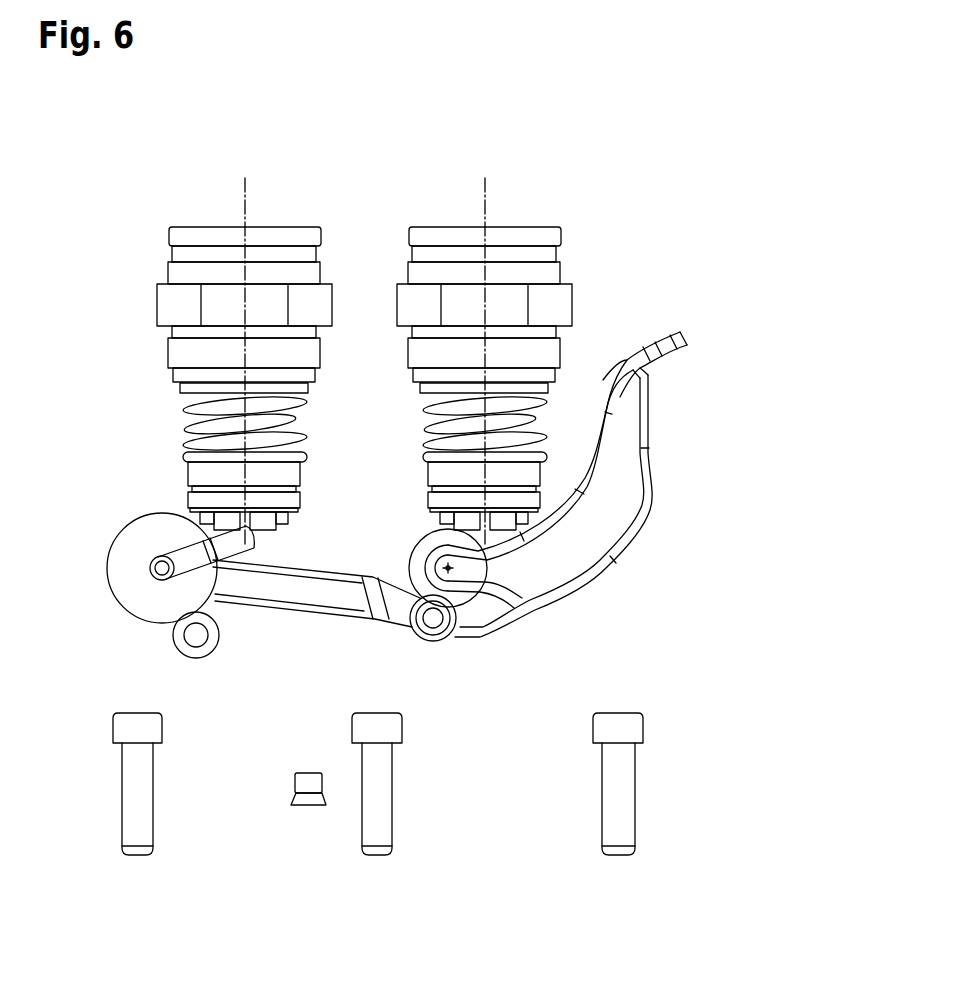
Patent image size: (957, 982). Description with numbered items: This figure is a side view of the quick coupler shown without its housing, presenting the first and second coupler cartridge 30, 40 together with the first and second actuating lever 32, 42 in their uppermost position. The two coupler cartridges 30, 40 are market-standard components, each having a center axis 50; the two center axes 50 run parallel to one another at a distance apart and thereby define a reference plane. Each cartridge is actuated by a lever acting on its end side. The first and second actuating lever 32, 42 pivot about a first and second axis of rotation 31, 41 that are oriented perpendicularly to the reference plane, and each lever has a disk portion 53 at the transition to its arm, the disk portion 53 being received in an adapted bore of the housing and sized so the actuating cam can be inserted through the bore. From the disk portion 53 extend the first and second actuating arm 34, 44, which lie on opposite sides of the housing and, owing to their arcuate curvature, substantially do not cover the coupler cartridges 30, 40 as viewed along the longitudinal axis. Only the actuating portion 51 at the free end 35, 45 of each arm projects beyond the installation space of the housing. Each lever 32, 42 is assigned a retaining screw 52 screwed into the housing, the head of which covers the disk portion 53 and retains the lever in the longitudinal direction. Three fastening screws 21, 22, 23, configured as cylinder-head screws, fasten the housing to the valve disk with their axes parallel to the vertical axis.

The fastening screw 21 is at (620, 838).
The fastening screw 22 is at (138, 835).
The fastening screw 23 is at (378, 835).
The first coupler cartridge 30 is at (448, 240).
The first axis of rotation 31 is at (452, 570).
The first actuating lever 32 is at (594, 484).
The first actuating arm 34 is at (597, 493).
The free end 35 is at (704, 328).
The second coupler cartridge 40 is at (208, 240).
The second axis of rotation 41 is at (152, 572).
The second actuating lever 42 is at (462, 509).
The second actuating arm 44 is at (580, 580).
The free end 45 is at (623, 357).
The center axis 50 is at (245, 180).
The actuating portion 51 is at (704, 328).
The retaining screw 52 is at (220, 638).
The disk portion 53 is at (123, 560).